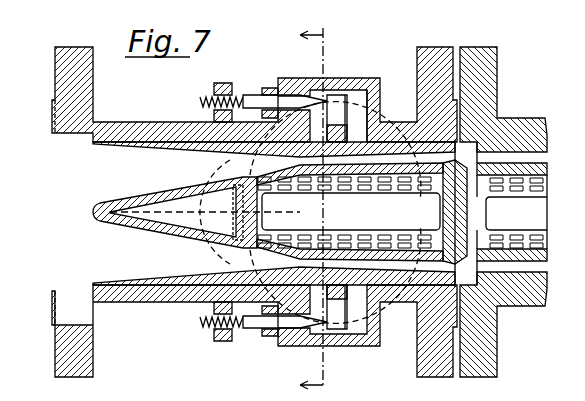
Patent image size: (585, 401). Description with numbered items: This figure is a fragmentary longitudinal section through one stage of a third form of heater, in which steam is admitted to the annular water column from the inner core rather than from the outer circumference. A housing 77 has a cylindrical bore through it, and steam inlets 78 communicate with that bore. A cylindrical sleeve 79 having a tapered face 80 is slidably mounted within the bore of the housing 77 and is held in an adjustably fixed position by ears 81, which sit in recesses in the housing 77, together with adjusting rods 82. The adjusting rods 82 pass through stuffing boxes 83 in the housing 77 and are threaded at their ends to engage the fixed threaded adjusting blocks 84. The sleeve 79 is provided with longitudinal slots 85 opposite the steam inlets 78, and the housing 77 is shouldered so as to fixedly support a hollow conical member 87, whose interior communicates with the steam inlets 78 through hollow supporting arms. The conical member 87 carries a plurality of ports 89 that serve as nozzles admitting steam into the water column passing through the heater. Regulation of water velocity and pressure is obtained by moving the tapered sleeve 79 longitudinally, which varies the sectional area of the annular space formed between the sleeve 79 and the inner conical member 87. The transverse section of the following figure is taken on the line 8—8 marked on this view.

The housing 77 is at (148, 126).
The cylindrical sleeve 79 is at (185, 303).
The tapered face 80 is at (247, 256).
The longitudinal slots 85 is at (237, 208).
The hollow conical member 87 is at (203, 180).
The ports 89 is at (367, 240).
The steam inlets 78 is at (386, 218).
The ears 81 is at (336, 115).
The adjusting rods 82 is at (254, 96).
The stuffing boxes 83 is at (292, 92).
The fixed threaded adjusting blocks 84 is at (217, 86).
The section line 8— 8 is at (311, 210).